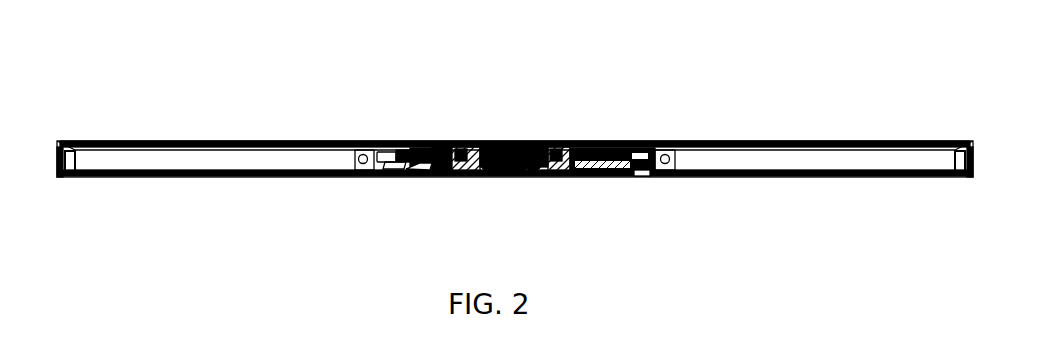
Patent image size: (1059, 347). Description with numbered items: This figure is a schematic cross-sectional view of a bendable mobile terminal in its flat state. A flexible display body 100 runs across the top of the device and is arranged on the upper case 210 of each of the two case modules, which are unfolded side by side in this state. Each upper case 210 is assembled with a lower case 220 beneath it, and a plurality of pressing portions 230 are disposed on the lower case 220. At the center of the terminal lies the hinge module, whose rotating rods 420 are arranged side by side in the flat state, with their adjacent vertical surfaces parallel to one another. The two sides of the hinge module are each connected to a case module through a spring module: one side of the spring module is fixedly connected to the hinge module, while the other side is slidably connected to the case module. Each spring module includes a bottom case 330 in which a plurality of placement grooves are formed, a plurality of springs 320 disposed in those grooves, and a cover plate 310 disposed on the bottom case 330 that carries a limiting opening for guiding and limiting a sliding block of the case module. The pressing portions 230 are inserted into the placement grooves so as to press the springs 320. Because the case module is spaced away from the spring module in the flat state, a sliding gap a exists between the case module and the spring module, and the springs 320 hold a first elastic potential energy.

The flexible display body 100 is at (358, 141).
The upper case 210 is at (262, 140).
The lower case 220 is at (287, 172).
The pressing portion 230 is at (378, 176).
The cover plate 310 is at (437, 140).
The spring 320 is at (427, 176).
The bottom case 330 is at (468, 178).
The rotating rod 420 is at (489, 171).
The sliding gap a is at (643, 176).